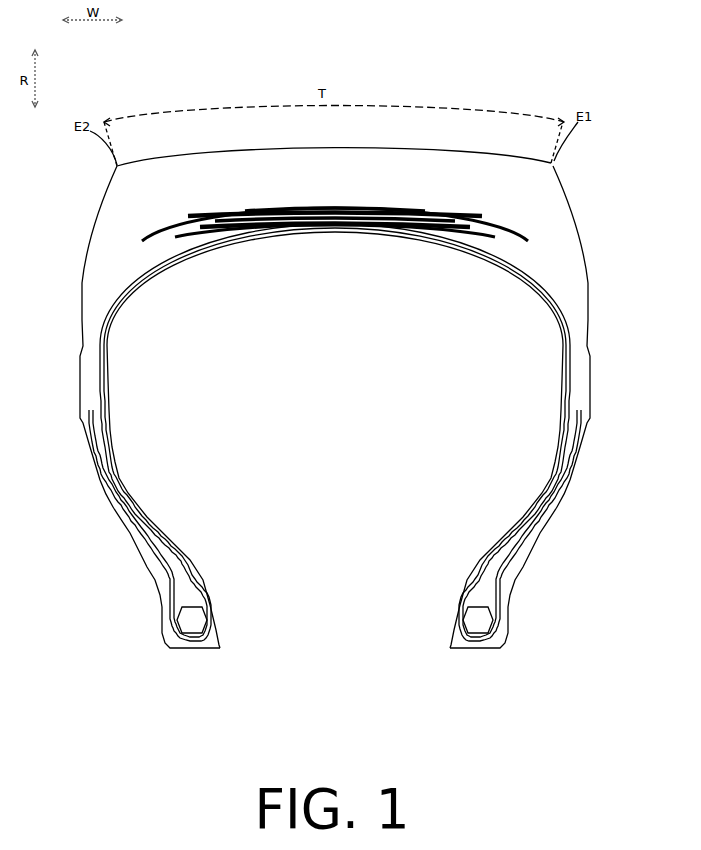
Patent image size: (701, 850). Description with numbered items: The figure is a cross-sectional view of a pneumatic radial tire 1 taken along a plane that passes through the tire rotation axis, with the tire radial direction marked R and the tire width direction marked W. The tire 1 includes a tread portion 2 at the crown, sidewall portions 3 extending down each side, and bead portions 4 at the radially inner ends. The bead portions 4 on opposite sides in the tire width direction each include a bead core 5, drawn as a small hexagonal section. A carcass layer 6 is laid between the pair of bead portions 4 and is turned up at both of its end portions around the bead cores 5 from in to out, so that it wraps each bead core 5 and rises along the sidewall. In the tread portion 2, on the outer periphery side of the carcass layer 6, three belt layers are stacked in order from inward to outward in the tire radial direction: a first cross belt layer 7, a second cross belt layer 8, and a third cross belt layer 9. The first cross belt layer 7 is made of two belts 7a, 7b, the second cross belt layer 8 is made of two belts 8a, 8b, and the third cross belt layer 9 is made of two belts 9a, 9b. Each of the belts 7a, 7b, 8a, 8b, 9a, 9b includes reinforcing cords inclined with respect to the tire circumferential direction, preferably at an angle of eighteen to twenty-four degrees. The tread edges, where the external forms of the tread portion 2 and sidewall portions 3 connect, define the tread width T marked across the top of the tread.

The tire 1 is at (578, 60).
The tread portion 2 is at (502, 130).
The sidewall portion 3 is at (66, 357).
The bead portion 4 is at (154, 658).
The bead core 5 is at (190, 623).
The carcass layer 6 is at (176, 542).
The first cross belt layer 7 is at (236, 271).
The belt 7a is at (242, 231).
The belt 7b is at (255, 228).
The second cross belt layer 8 is at (306, 271).
The belt 8a is at (317, 214).
The belt 8b is at (327, 211).
The third cross belt layer 9 is at (372, 271).
The belt 9a is at (380, 208).
The belt 9b is at (390, 209).